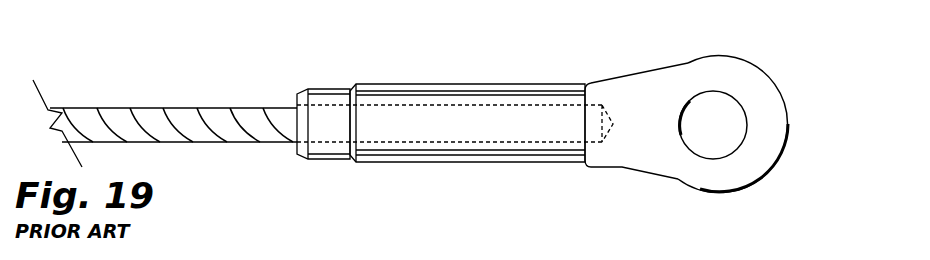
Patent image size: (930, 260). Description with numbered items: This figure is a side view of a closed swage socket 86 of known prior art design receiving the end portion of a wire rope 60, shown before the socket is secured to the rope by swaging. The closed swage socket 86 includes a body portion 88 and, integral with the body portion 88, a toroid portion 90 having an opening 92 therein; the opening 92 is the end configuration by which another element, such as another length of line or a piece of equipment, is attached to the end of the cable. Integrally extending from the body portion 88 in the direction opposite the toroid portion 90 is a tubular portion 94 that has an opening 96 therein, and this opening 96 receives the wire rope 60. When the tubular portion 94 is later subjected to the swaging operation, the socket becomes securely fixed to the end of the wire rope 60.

The wire rope 60 is at (190, 118).
The tubular portion 94 is at (420, 97).
The opening 96 is at (480, 107).
The body portion 88 is at (622, 110).
The closed swage socket 86 is at (710, 116).
The opening 92 is at (745, 111).
The toroid portion 90 is at (750, 162).